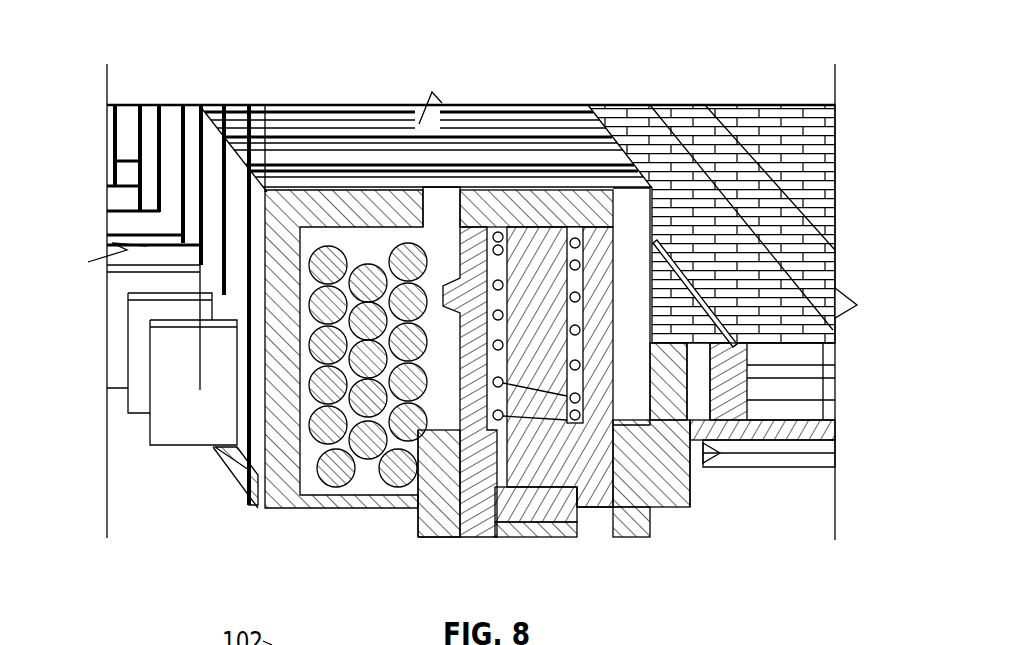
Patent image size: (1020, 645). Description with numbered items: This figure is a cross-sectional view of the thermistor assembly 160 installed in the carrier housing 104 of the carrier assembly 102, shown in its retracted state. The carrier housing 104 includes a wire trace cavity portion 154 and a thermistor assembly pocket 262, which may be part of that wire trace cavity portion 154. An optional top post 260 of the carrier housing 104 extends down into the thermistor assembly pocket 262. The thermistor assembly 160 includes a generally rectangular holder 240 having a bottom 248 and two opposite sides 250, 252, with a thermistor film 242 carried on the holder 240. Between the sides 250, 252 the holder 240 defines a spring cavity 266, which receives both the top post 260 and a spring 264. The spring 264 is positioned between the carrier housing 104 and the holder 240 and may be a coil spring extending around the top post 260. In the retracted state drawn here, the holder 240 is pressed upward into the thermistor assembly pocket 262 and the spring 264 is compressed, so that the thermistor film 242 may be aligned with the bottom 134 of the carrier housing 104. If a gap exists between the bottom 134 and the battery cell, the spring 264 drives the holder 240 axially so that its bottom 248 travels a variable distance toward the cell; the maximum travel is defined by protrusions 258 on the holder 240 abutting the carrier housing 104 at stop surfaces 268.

The carrier assembly 102 is at (284, 51).
The wire trace cavity portion 154 is at (347, 246).
The thermistor assembly pocket 262 is at (451, 243).
The carrier housing 104 is at (513, 198).
The top post 260 is at (619, 303).
The protrusions 258 is at (752, 105).
The spring 264 is at (583, 332).
The stop surfaces 268 is at (615, 415).
The thermistor assembly 160 is at (605, 468).
The side 252 is at (617, 502).
The bottom 248 is at (597, 539).
The thermistor film 242 is at (567, 540).
The holder 240 is at (521, 480).
The side 250 is at (450, 510).
The bottom 134 is at (427, 540).
The spring cavity 266 is at (497, 398).